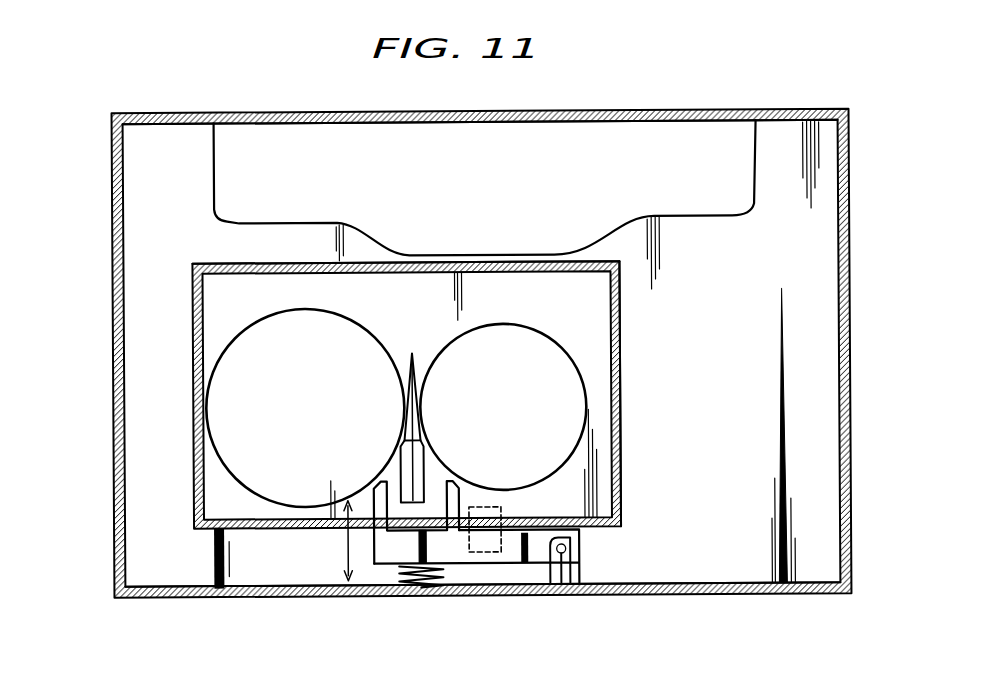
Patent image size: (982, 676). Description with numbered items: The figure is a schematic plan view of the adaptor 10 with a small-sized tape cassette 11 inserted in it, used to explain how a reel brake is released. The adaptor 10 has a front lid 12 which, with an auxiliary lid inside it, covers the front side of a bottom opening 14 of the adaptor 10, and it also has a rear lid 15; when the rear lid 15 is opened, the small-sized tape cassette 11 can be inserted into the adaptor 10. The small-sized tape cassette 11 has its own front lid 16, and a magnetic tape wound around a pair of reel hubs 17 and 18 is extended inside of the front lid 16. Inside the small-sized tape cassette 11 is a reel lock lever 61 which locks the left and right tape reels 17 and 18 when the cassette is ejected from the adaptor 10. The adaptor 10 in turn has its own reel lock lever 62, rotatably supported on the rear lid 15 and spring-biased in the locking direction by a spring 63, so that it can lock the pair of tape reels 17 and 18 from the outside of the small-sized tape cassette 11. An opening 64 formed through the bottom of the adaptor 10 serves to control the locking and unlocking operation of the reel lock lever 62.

The adaptor 10 is at (113, 446).
The small-sized tape cassette 11 is at (620, 353).
The front lid 12 is at (113, 149).
The bottom opening 14 is at (313, 222).
The rear lid 15 is at (620, 595).
The front lid 16 is at (310, 262).
The reel hub 17 is at (259, 332).
The reel hub 18 is at (544, 348).
The reel lock lever 61 is at (412, 356).
The reel lock lever 62 is at (510, 555).
The spring 63 is at (436, 578).
The opening 64 is at (504, 528).